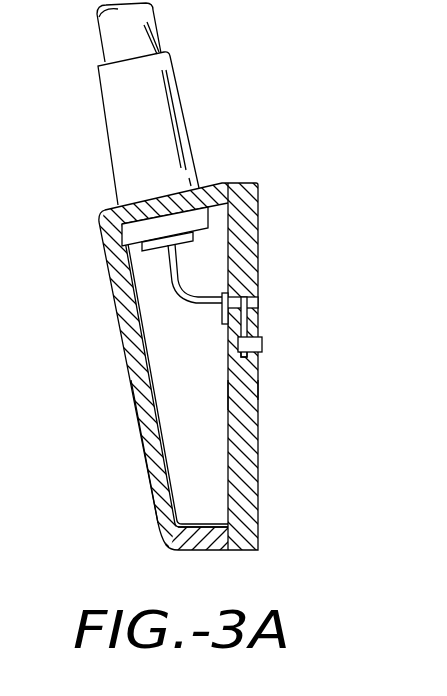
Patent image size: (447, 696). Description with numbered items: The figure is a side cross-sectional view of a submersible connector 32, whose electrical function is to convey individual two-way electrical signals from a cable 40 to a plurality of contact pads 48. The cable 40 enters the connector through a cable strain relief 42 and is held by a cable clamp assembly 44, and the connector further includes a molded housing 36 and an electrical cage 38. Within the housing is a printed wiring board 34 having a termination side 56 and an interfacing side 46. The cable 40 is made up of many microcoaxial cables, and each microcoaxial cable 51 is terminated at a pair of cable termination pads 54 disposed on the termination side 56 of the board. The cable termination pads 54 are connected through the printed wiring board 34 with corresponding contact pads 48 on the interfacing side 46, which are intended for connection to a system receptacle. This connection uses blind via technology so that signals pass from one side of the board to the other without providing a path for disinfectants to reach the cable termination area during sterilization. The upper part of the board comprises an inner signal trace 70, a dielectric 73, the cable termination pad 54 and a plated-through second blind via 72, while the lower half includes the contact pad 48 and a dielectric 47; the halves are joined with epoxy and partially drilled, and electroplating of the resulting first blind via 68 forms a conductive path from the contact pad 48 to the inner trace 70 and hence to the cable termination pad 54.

The submersible connector 32 is at (296, 473).
The printed wiring board 34 is at (257, 538).
The molded housing 36 is at (163, 510).
The electrical cage 38 is at (126, 292).
The cable 40 is at (140, 27).
The cable strain relief 42 is at (158, 104).
The cable clamp assembly 44 is at (200, 213).
The interfacing side 46 is at (260, 437).
The dielectric 47 is at (260, 391).
The contact pads 48 is at (260, 358).
The microcoaxial cable 51 is at (182, 268).
The cable termination pads 54 is at (224, 304).
The termination side 56 is at (229, 507).
The first blind via 68 is at (260, 343).
The inner signal trace 70 is at (246, 318).
The second blind via 72 is at (226, 303).
The dielectric 73 is at (228, 397).